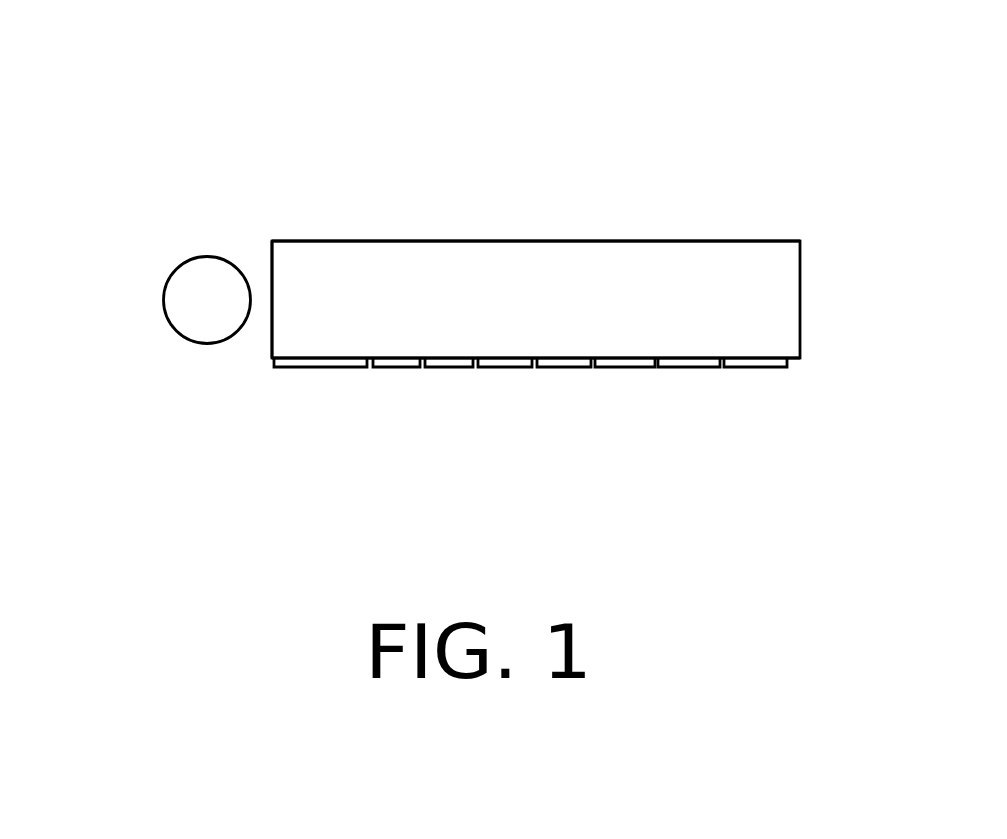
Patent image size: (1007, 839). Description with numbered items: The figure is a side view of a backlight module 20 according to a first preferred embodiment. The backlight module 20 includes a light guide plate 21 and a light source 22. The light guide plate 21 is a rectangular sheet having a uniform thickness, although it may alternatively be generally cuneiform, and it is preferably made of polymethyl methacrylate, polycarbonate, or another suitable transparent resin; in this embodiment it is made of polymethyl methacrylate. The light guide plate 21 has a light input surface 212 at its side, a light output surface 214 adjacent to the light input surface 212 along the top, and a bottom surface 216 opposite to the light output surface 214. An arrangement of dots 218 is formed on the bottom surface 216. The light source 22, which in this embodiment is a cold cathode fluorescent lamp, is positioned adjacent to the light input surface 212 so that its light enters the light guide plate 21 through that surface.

The backlight module 20 is at (583, 65).
The light guide plate 21 is at (717, 263).
The light input surface 212 is at (259, 256).
The light output surface 214 is at (385, 220).
The bottom surface 216 is at (324, 378).
The dots 218 is at (748, 362).
The light source 22 is at (192, 282).